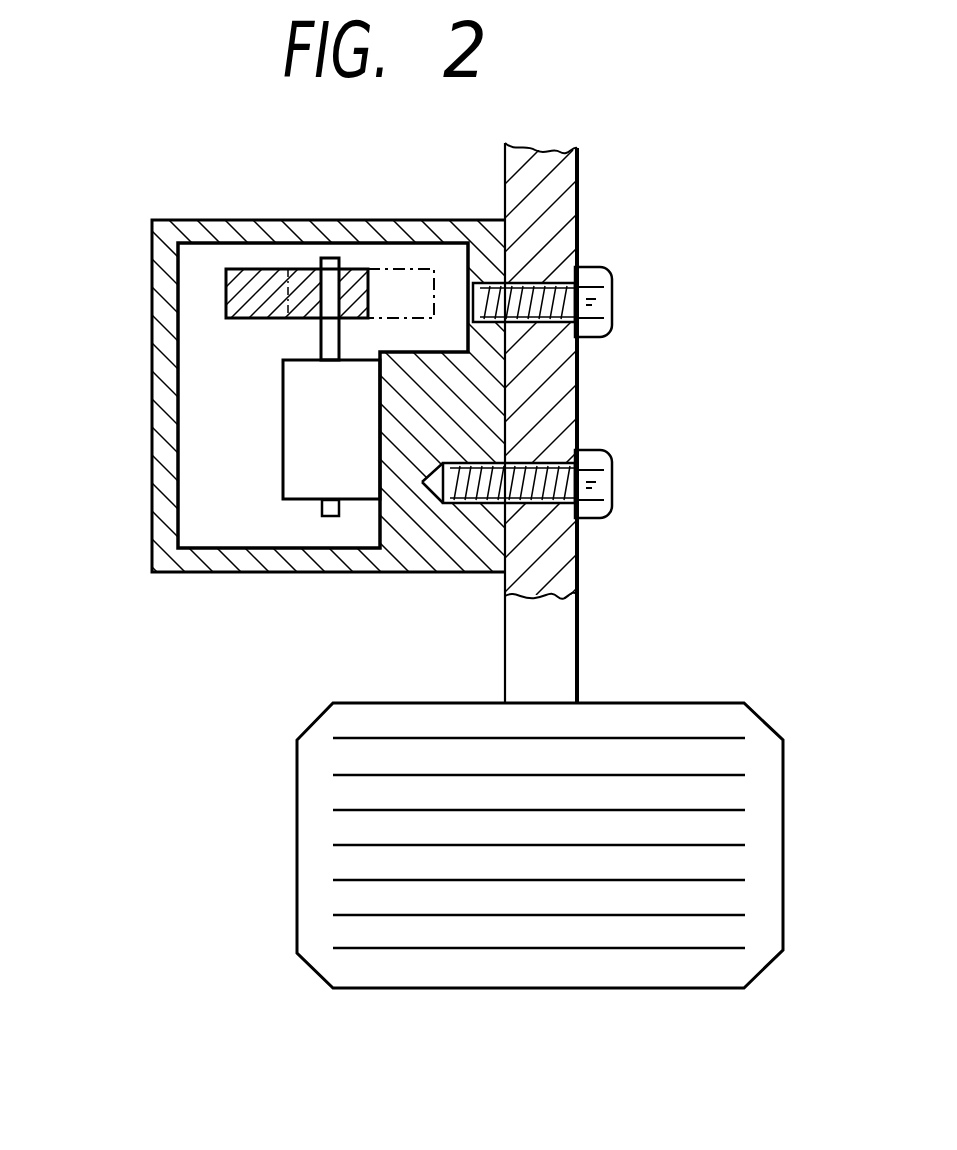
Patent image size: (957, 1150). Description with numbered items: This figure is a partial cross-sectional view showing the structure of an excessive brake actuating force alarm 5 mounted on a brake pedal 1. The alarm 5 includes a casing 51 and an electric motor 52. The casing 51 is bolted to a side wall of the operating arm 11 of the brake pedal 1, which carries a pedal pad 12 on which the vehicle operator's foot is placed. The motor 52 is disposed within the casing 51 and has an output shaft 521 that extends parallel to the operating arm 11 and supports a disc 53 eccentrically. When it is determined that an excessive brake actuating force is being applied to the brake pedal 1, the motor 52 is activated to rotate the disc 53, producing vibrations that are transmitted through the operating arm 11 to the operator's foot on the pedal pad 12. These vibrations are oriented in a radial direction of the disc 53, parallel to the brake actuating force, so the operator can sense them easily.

The brake pedal 1 is at (662, 660).
The operating arm 11 is at (570, 553).
The pedal pad 12 is at (783, 818).
The excessive brake actuating force alarm 5 is at (135, 264).
The casing 51 is at (322, 222).
The electric motor 52 is at (291, 447).
The output shaft 521 is at (325, 340).
The disc 53 is at (256, 276).